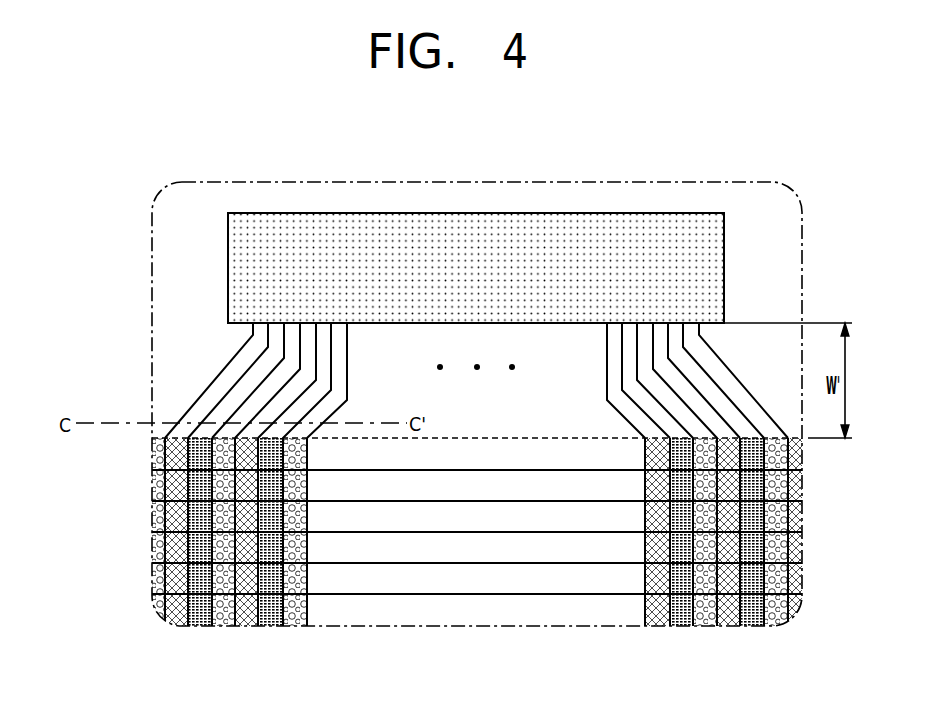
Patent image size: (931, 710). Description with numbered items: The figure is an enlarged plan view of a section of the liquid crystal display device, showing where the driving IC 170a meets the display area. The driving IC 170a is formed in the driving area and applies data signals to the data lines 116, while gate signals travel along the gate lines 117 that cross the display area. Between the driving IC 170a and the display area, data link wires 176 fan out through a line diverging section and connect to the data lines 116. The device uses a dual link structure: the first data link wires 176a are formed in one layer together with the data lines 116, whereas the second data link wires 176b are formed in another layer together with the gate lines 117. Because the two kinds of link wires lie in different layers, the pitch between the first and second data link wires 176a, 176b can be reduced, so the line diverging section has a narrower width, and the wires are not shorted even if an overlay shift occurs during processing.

The driving IC 170a is at (243, 270).
The data link wires 176 is at (400, 380).
The first data link wires 176a is at (238, 352).
The second data link wires 176b is at (226, 395).
The data lines 116 is at (307, 610).
The gate lines 117 is at (458, 595).